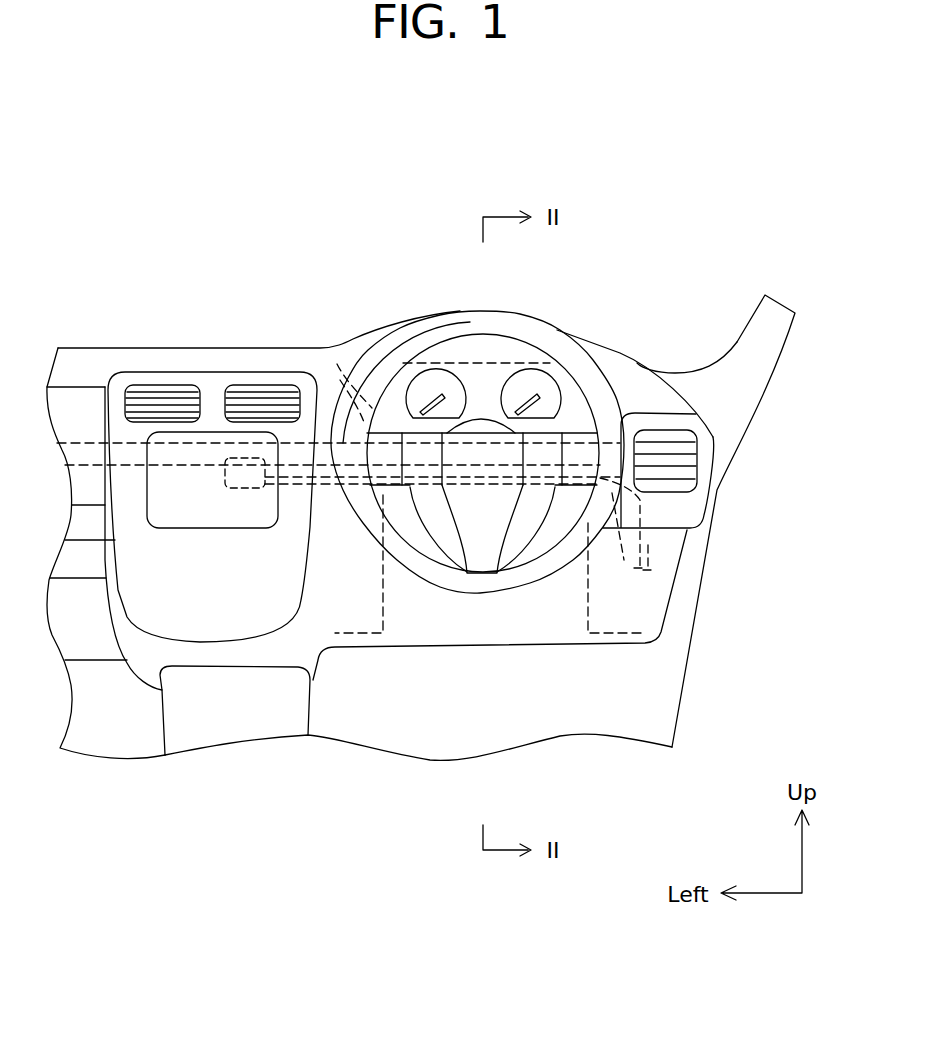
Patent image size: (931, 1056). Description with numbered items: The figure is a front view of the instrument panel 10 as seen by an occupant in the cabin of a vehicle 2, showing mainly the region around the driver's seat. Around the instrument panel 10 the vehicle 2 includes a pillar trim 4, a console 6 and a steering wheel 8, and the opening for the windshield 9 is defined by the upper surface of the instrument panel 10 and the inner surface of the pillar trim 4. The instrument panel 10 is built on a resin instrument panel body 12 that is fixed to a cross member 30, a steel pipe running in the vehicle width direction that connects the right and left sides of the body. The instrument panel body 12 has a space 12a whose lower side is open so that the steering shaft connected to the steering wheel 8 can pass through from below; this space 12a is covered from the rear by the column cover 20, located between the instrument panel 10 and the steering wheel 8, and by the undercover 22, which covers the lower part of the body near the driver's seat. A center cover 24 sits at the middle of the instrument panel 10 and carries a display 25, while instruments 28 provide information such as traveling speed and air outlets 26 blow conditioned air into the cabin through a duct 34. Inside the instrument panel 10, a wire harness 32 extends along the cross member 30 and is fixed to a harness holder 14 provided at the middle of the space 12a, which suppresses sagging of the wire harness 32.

The vehicle 2 is at (432, 166).
The pillar trim 4 is at (782, 322).
The console 6 is at (225, 723).
The steering wheel 8 is at (570, 340).
The windshield 9 is at (667, 286).
The instrument panel 10 is at (284, 286).
The instrument panel body 12 is at (693, 500).
The space 12a is at (561, 582).
The harness holder 14 is at (483, 433).
The column cover 20 is at (530, 527).
The undercover 22 is at (407, 597).
The center cover 24 is at (140, 367).
The display 25 is at (193, 480).
The air outlets 26 is at (240, 387).
The instruments 28 is at (530, 362).
The cross member 30 is at (90, 453).
The wire harness 32 is at (648, 540).
The duct 34 is at (337, 364).